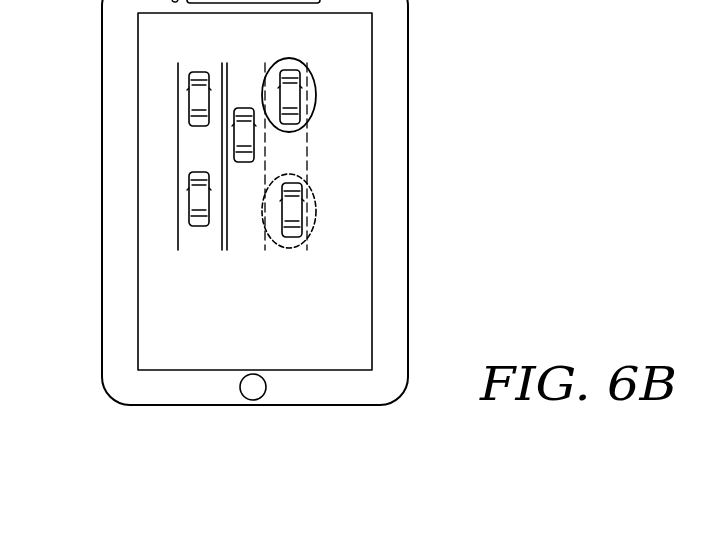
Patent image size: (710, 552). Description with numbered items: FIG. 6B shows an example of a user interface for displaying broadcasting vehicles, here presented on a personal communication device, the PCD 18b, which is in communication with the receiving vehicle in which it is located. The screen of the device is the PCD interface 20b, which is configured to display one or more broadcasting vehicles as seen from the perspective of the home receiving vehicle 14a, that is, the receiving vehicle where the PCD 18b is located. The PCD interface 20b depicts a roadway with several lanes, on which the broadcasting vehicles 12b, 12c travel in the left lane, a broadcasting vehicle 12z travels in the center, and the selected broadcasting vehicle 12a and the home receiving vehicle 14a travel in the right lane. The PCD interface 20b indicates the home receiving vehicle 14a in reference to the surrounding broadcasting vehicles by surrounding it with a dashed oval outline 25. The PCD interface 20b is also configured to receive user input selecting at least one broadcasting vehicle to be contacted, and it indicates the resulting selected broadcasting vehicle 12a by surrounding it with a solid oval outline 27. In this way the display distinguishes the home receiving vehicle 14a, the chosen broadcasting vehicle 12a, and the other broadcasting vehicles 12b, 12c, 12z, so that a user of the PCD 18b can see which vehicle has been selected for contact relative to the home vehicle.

The PCD 18b is at (408, 183).
The PCD interface 20b is at (335, 337).
The selected broadcasting vehicle 12a is at (277, 98).
The broadcasting vehicle 12b is at (192, 222).
The broadcasting vehicle 12c is at (190, 112).
The broadcasting vehicle 12z is at (255, 135).
The home receiving vehicle 14a is at (281, 232).
The solid oval outline 27 is at (314, 103).
The dashed oval outline 25 is at (315, 218).